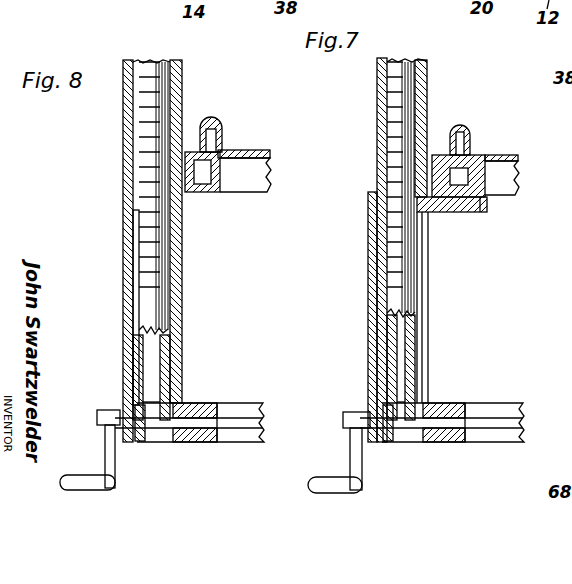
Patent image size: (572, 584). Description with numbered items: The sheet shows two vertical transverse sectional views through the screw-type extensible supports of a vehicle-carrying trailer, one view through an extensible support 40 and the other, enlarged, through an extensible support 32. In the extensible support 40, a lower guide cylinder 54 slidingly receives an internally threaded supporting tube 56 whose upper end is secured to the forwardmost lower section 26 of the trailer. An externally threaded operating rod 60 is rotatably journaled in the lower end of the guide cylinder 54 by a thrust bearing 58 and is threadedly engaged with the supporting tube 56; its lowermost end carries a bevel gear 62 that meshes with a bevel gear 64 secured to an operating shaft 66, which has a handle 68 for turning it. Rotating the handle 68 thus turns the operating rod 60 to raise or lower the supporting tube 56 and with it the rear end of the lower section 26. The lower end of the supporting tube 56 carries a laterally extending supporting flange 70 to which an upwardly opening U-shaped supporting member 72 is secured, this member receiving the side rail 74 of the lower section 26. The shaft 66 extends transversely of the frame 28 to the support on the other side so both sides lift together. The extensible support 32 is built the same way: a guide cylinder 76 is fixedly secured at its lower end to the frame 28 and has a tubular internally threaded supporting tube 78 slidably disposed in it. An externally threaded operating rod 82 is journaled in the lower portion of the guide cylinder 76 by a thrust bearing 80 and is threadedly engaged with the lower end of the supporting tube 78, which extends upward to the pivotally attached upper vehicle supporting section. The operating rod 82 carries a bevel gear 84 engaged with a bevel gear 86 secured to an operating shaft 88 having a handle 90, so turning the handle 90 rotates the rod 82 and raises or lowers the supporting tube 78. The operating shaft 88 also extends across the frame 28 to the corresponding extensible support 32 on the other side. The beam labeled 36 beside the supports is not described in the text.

In FIG. 8, the forwardmost lower section 26 is at (243, 186).
In FIG. 7, the forwardmost lower section 26 is at (503, 178).
In FIG. 8, the frame 28 is at (253, 432).
In FIG. 7, the frame 28 is at (510, 432).
In FIG. 8, the extensible support 32 is at (187, 104).
In FIG. 8, the bracket plate 36 is at (232, 150).
In FIG. 7, the bracket plate 36 is at (501, 155).
In FIG. 7, the extensible support 40 is at (431, 95).
In FIG. 7, the lower guide cylinder 54 is at (368, 305).
In FIG. 7, the internally threaded supporting tube 56 is at (383, 106).
In FIG. 7, the thrust bearing 58 is at (425, 396).
In FIG. 7, the externally threaded operating rod 60 is at (396, 62).
In FIG. 7, the bevel gear 62 is at (430, 442).
In FIG. 7, the bevel gear 64 is at (392, 442).
In FIG. 7, the operating shaft 66 is at (491, 418).
In FIG. 7, the handle 68 is at (355, 468).
In FIG. 7, the laterally extending supporting flange 70 is at (468, 213).
In FIG. 7, the U-shaped supporting member 72 is at (487, 206).
In FIG. 7, the side rail 74 is at (446, 158).
In FIG. 8, the guide cylinder 76 is at (124, 242).
In FIG. 8, the tubular internally threaded supporting tube 78 is at (129, 128).
In FIG. 8, the thrust bearing 80 is at (182, 398).
In FIG. 8, the externally threaded operating rod 82 is at (165, 325).
In FIG. 8, the bevel gear 84 is at (183, 442).
In FIG. 8, the bevel gear 86 is at (142, 442).
In FIG. 8, the operating shaft 88 is at (236, 418).
In FIG. 8, the handle 90 is at (110, 458).